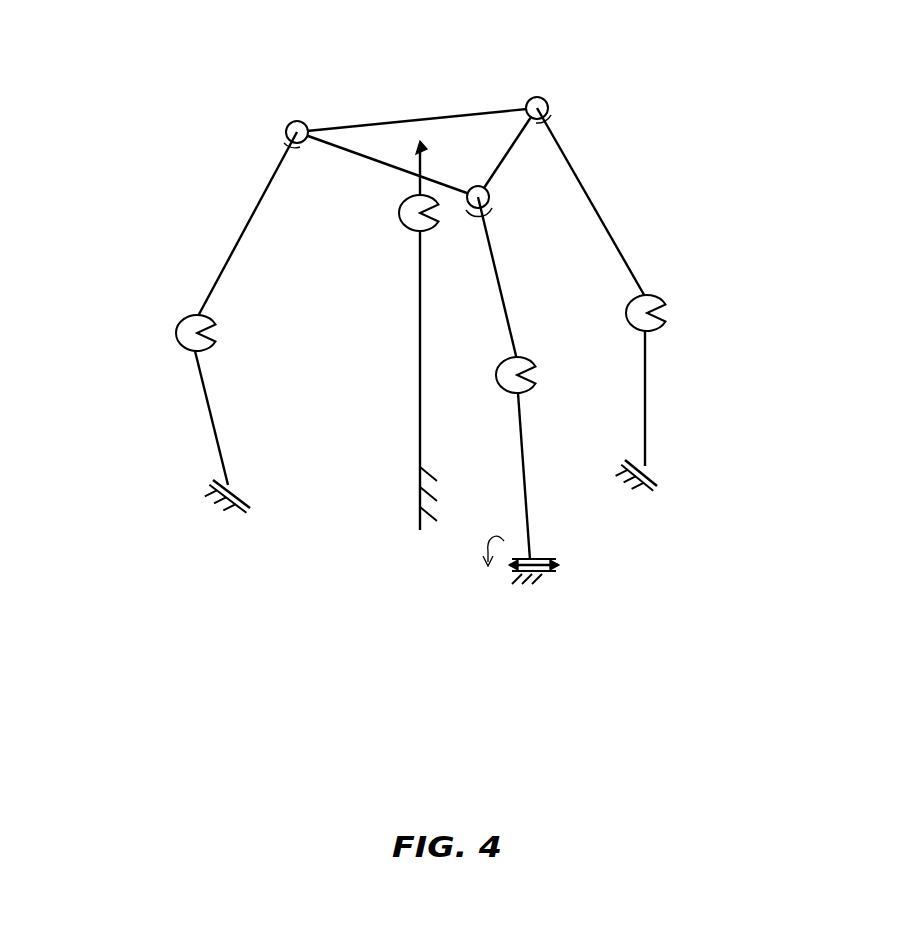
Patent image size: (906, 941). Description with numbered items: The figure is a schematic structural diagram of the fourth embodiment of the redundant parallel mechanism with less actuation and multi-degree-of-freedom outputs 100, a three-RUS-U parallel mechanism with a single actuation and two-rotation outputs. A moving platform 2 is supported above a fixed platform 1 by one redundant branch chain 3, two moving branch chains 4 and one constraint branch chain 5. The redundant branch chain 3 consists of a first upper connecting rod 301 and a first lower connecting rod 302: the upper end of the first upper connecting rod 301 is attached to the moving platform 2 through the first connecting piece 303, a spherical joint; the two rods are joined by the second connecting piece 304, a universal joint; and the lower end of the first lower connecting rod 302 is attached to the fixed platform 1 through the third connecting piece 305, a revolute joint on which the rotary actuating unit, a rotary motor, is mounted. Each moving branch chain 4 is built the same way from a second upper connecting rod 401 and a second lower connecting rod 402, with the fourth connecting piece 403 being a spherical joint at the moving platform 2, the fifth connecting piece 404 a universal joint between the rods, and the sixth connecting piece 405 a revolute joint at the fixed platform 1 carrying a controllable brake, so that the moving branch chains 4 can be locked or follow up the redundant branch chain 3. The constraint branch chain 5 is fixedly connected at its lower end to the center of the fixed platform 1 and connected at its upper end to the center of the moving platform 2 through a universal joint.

The redundant parallel mechanism with less actuation and multi-degree-of-freedom out 100 is at (373, 108).
The fixed platform 1 is at (535, 585).
The moving platform 2 is at (482, 141).
The redundant branch chain 3 is at (530, 468).
The moving branch chain 4 is at (210, 277).
The constraint branch chain 5 is at (418, 405).
The first upper connecting rod 301 is at (500, 285).
The first lower connecting rod 302 is at (527, 432).
The first connecting piece 303 is at (490, 197).
The second connecting piece 304 is at (537, 376).
The third connecting piece 305 is at (553, 567).
The second upper connecting rod 401 is at (238, 227).
The second lower connecting rod 402 is at (212, 430).
The fourth connecting piece 403 is at (285, 126).
The fifth connecting piece 404 is at (178, 333).
The sixth connecting piece 405 is at (215, 485).